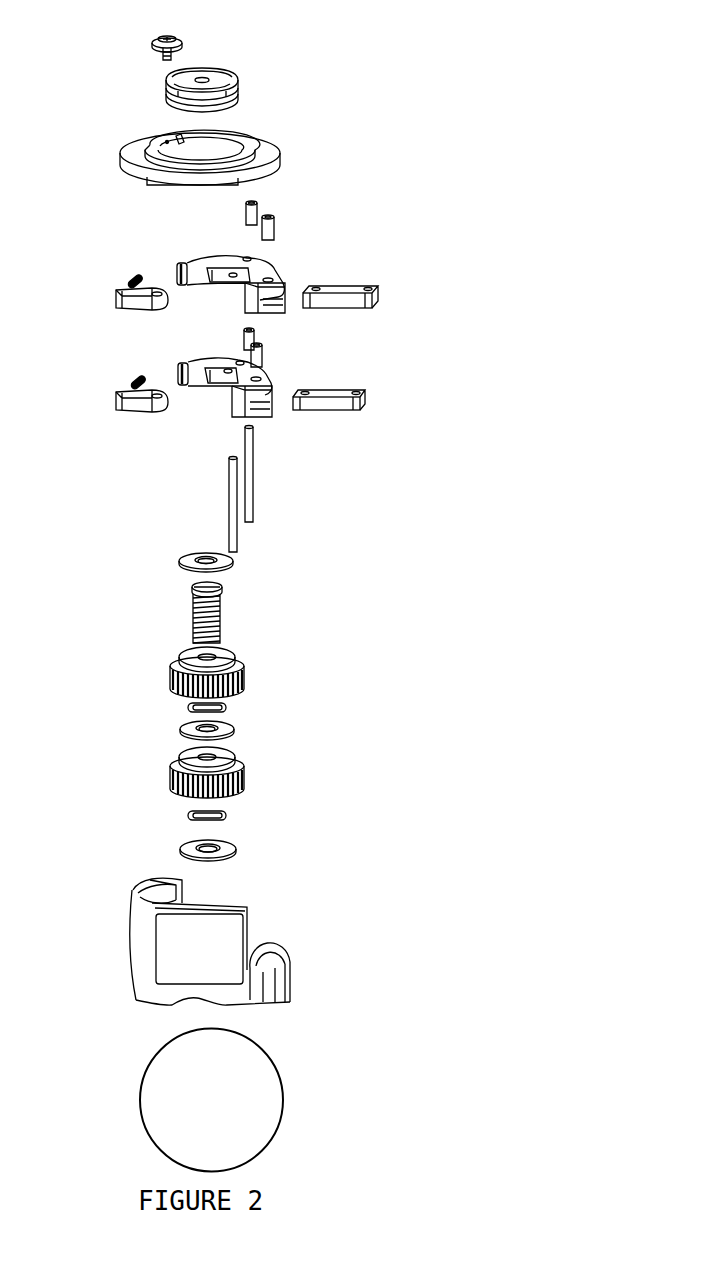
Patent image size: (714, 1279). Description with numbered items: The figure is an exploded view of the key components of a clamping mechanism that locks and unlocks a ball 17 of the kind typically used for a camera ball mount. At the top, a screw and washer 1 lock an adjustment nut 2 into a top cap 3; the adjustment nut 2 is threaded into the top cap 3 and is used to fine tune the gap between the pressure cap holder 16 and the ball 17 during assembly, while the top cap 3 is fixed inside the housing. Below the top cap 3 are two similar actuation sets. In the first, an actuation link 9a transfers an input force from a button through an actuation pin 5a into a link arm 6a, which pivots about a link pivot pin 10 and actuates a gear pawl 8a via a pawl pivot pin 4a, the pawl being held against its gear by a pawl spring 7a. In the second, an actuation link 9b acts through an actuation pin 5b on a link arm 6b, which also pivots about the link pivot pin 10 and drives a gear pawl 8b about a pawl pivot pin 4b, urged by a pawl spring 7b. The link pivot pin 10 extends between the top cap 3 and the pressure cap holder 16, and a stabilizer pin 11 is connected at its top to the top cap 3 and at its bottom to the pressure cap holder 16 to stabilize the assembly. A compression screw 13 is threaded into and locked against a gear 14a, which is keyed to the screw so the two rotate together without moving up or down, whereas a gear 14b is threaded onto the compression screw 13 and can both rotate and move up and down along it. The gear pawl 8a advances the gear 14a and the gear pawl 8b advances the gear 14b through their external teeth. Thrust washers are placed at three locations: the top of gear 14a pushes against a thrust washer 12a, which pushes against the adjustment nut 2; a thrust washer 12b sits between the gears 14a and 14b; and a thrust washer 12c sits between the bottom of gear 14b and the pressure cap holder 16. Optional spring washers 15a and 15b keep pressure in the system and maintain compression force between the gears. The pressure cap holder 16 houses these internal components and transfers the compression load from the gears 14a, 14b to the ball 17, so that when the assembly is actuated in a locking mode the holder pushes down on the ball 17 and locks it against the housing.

The screw and washer 1 is at (153, 43).
The adjustment nut 2 is at (165, 88).
The top cap 3 is at (282, 160).
The pawl pivot pin 4a is at (260, 200).
The actuation pin 5a is at (277, 218).
The link arm 6a is at (270, 268).
The pawl spring 7a is at (133, 277).
The gear pawl 8a is at (120, 300).
The actuation link 9a is at (378, 297).
The pawl pivot pin 4b is at (258, 330).
The actuation pin 5b is at (263, 352).
The link arm 6b is at (272, 417).
The pawl spring 7b is at (138, 377).
The gear pawl 8b is at (123, 410).
The actuation link 9b is at (367, 405).
The link pivot pin 10 is at (253, 452).
The stabilizer pin 11 is at (238, 535).
The thrust washer 12a is at (187, 557).
The compression screw 13 is at (190, 618).
The gear 14a is at (168, 670).
The spring washer 15a is at (228, 708).
The thrust washer 12b is at (237, 732).
The gear 14b is at (168, 765).
The spring washer 15b is at (227, 817).
The thrust washer 12c is at (238, 853).
The pressure cap holder 16 is at (292, 963).
The ball 17 is at (285, 1088).